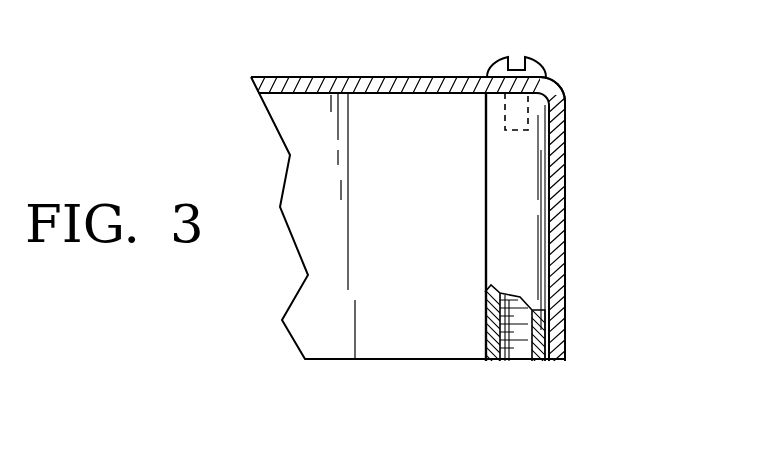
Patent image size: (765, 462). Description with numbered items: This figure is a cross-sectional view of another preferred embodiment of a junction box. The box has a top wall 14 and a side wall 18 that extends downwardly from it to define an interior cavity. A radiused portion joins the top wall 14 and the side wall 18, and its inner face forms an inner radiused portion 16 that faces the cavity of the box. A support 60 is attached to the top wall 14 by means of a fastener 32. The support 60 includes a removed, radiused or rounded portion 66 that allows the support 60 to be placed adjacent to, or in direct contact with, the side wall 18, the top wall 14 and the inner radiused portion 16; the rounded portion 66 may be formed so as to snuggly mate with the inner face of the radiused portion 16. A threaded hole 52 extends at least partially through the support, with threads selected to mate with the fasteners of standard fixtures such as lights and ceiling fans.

The top wall 14 is at (322, 77).
The inner radiused portion 16 is at (557, 108).
The side wall 18 is at (560, 226).
The fastener 32 is at (546, 63).
The threaded hole 52 is at (518, 361).
The support 60 is at (486, 249).
The rounded portion 66 is at (518, 108).